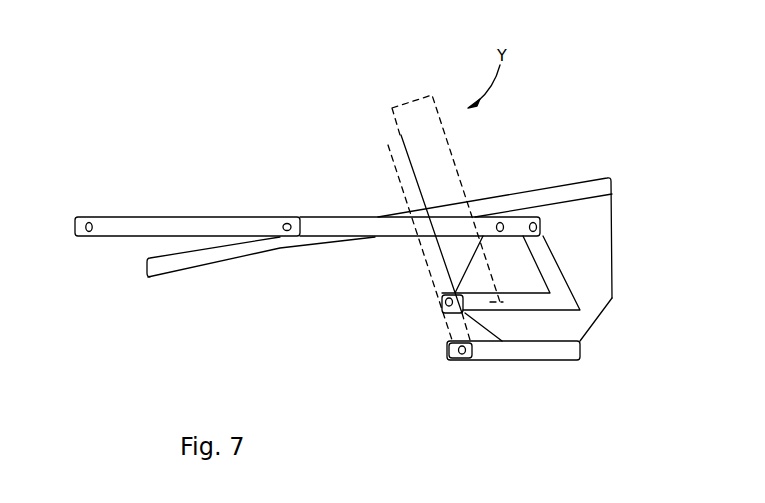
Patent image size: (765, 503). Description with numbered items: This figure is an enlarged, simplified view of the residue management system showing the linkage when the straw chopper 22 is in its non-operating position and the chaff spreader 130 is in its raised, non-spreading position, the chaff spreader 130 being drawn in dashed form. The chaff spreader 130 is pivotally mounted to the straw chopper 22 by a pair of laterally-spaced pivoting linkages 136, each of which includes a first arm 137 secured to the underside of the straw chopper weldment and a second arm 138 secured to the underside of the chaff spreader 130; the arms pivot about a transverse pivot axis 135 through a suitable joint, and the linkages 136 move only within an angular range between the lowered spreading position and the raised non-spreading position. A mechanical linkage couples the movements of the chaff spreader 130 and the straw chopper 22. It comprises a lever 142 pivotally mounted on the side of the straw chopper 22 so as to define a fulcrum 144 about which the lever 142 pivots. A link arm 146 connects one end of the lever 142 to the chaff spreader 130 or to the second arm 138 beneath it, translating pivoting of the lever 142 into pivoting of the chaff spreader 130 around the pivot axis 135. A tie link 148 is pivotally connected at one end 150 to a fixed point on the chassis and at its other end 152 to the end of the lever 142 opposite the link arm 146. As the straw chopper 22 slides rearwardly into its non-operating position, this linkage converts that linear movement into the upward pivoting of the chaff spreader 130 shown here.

The straw chopper 22 is at (594, 314).
The chaff spreader 130 is at (417, 108).
The transverse pivot axis 135 is at (455, 358).
The pivoting linkage 136 is at (545, 358).
The first arm 137 is at (497, 362).
The second arm 138 is at (437, 255).
The lever 142 is at (343, 222).
The fulcrum 144 is at (505, 217).
The link arm 146 is at (553, 265).
The tie link 148 is at (197, 225).
The first end of tie link 150 is at (93, 211).
The second end of tie link 152 is at (293, 215).